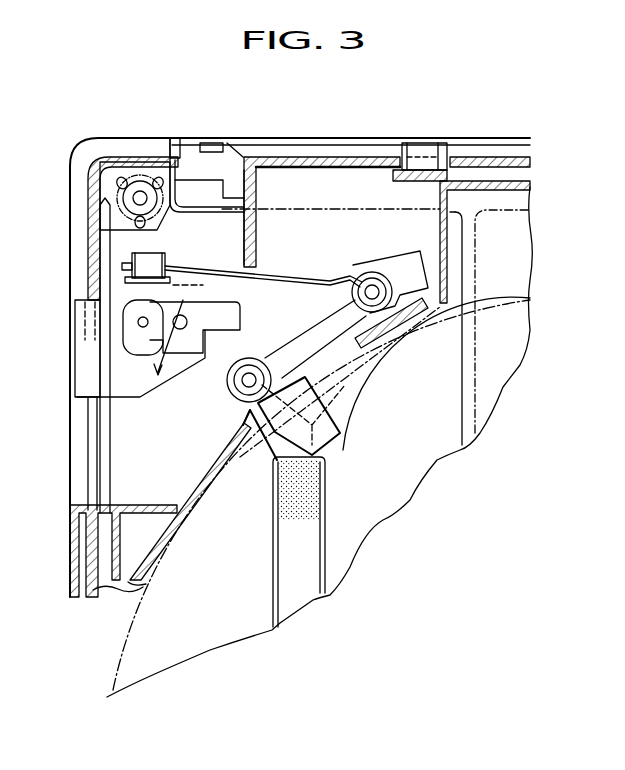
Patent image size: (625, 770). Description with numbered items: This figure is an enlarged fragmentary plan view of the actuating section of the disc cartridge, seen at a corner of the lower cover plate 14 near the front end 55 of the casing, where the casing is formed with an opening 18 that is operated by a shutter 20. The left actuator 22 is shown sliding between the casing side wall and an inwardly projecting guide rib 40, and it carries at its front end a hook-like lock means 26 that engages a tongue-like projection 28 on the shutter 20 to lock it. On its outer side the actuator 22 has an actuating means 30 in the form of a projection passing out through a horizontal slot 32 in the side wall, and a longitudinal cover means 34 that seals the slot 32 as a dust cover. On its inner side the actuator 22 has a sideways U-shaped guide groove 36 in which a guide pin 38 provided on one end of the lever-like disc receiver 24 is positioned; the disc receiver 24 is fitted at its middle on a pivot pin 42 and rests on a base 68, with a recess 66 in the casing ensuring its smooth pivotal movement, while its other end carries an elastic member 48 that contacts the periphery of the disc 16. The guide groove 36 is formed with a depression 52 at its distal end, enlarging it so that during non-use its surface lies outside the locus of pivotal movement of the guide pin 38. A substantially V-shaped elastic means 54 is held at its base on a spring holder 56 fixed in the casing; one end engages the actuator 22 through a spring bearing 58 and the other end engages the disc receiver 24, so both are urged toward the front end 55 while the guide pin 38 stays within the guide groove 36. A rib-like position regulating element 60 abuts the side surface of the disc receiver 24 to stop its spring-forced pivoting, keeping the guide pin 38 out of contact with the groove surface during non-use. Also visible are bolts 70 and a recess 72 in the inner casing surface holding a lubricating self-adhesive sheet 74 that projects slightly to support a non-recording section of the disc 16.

The lower cover plate 14 is at (70, 253).
The disc 16 is at (132, 640).
The opening 18 is at (477, 337).
The shutter 20 is at (473, 140).
The actuator 22 is at (185, 190).
The disc receiver 24 is at (340, 447).
The lock means 26 is at (245, 157).
The tongue-like projection 28 is at (210, 143).
The actuating means 30 is at (72, 403).
The slot 32 is at (88, 432).
The cover means 34 is at (100, 230).
The guide groove 36 is at (127, 317).
The guide pin 38 is at (177, 330).
The guide rib 40 is at (263, 190).
The pivot pin 42 is at (283, 355).
The elastic member 48 is at (355, 382).
The depression 52 is at (188, 318).
The elastic means 54 is at (335, 285).
The front end 55 is at (341, 140).
The spring holder 56 is at (400, 327).
The spring bearing 58 is at (160, 256).
The position regulating element 60 is at (270, 276).
The recess 66 is at (358, 418).
The base 68 is at (235, 400).
The bolt 70 is at (138, 175).
The recess 72 is at (273, 550).
The lubricating self-adhesive sheet 74 is at (300, 515).